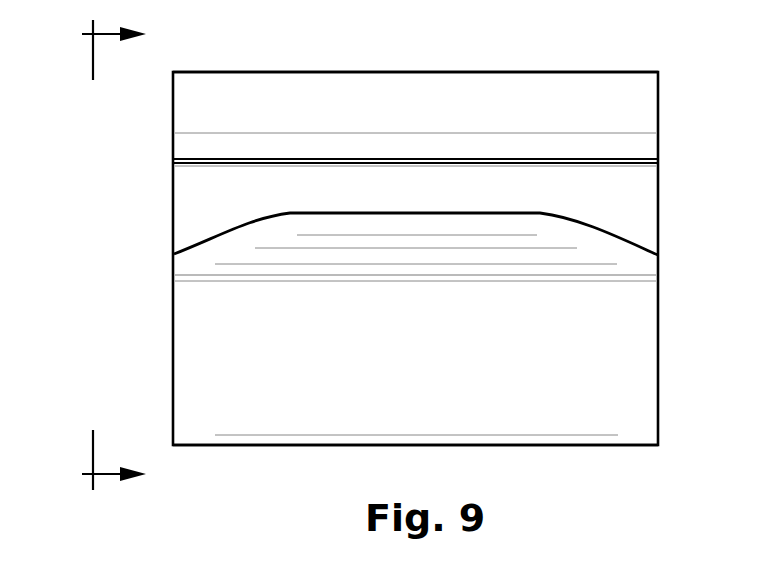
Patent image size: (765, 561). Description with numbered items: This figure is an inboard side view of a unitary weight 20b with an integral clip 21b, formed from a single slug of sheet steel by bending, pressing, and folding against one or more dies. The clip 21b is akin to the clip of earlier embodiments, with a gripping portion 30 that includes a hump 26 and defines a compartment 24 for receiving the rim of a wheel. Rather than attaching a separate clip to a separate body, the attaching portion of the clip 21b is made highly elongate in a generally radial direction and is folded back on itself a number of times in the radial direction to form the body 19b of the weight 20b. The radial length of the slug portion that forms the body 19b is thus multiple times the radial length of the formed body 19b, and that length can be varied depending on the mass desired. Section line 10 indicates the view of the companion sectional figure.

The section line 10 is at (137, 255).
The gripping portion 30 is at (353, 72).
The clip 21b is at (442, 108).
The compartment 24 is at (426, 196).
The weight 20b is at (65, 240).
The hump 26 is at (487, 213).
The body 19b is at (427, 366).